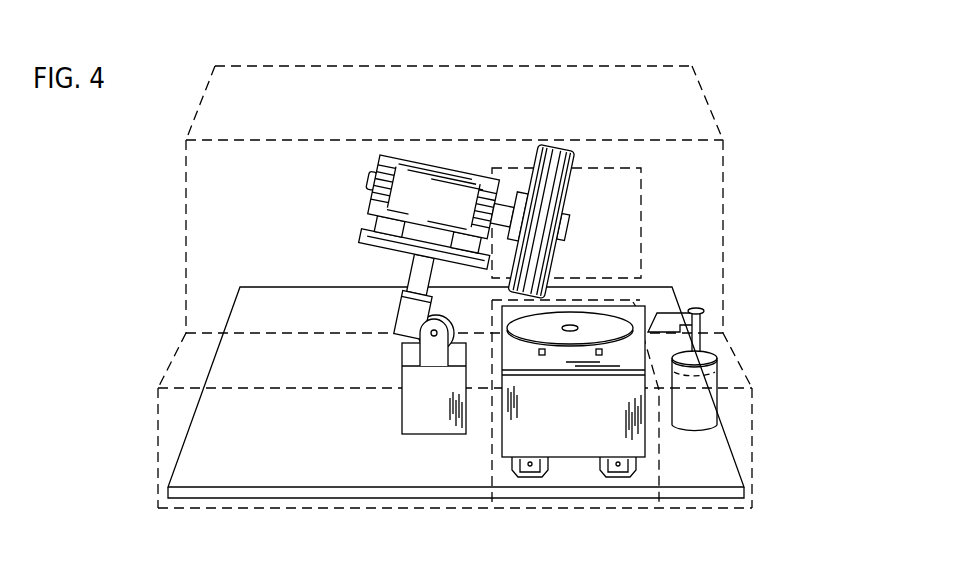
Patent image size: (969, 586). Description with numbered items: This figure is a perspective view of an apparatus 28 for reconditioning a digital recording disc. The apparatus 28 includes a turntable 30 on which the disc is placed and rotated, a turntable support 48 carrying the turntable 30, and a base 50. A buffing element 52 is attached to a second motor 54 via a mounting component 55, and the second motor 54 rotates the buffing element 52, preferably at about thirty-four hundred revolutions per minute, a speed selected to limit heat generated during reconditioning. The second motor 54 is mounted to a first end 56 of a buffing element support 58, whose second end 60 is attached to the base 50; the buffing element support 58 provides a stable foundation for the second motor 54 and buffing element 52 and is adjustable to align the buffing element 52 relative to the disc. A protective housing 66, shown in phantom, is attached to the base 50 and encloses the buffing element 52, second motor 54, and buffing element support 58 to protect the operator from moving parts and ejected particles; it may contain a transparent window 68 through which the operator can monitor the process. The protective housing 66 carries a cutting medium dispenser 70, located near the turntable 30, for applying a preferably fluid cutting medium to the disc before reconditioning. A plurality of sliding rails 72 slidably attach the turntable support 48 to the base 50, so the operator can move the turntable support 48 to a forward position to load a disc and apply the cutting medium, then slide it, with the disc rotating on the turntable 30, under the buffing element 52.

The apparatus 28 is at (221, 23).
The turntable 30 is at (617, 320).
The turntable support 48 is at (648, 437).
The base 50 is at (217, 440).
The buffing element 52 is at (562, 148).
The second motor 54 is at (425, 167).
The mounting component 55 is at (509, 202).
The first end 56 is at (417, 263).
The buffing element support 58 is at (413, 347).
The second end 60 is at (430, 433).
The protective housing 66 is at (710, 107).
The transparent window 68 is at (643, 193).
The cutting medium dispenser 70 is at (718, 362).
The sliding rails 72 is at (600, 475).